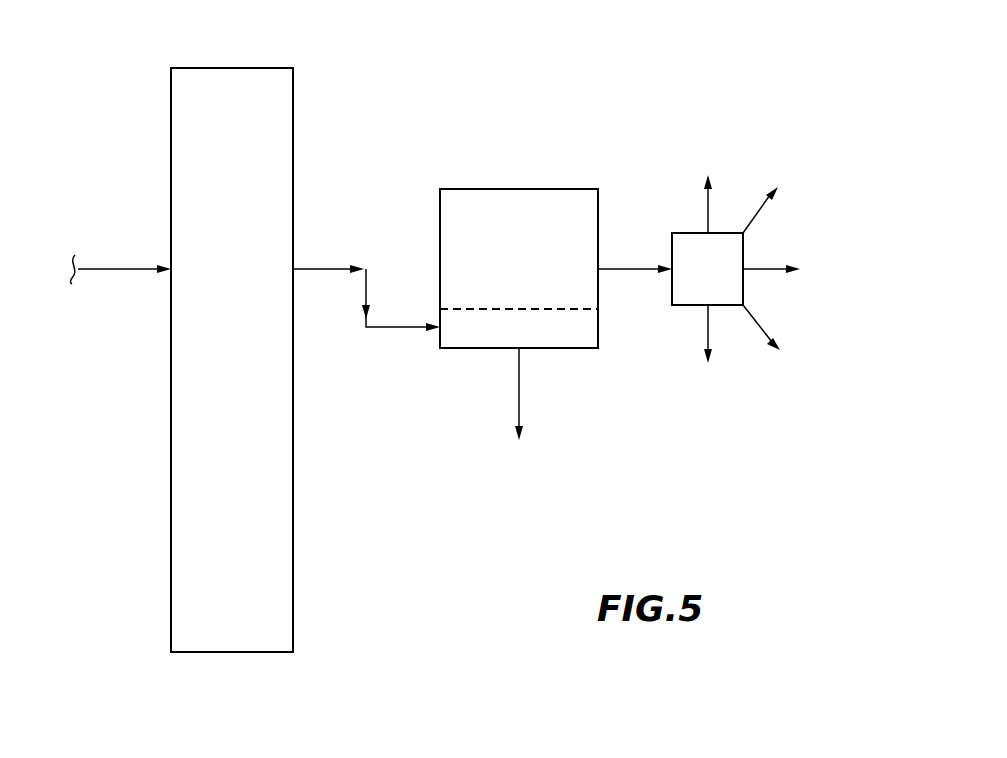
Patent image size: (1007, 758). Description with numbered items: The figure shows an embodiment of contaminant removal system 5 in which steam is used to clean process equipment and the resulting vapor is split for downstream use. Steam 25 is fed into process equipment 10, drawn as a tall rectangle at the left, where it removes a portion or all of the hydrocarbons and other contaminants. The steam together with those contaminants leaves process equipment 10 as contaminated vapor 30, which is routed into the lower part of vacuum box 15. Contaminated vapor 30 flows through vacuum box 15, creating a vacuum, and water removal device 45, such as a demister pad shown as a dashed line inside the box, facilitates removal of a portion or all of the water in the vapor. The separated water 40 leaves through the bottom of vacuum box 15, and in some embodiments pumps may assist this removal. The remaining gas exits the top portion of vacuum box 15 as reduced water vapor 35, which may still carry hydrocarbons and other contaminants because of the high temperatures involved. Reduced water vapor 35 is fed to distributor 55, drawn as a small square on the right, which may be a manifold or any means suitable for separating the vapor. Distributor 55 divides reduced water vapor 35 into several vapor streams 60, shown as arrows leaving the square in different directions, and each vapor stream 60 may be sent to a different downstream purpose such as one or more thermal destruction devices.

The contaminant removal system 5 is at (624, 97).
The process equipment 10 is at (293, 115).
The vacuum box 15 is at (525, 189).
The steam 25 is at (98, 267).
The contaminated vapor 30 is at (305, 267).
The reduced water vapor 35 is at (609, 267).
The water 40 is at (519, 397).
The water removal device 45 is at (483, 309).
The distributor 55 is at (672, 305).
The vapor streams 60 is at (710, 210).